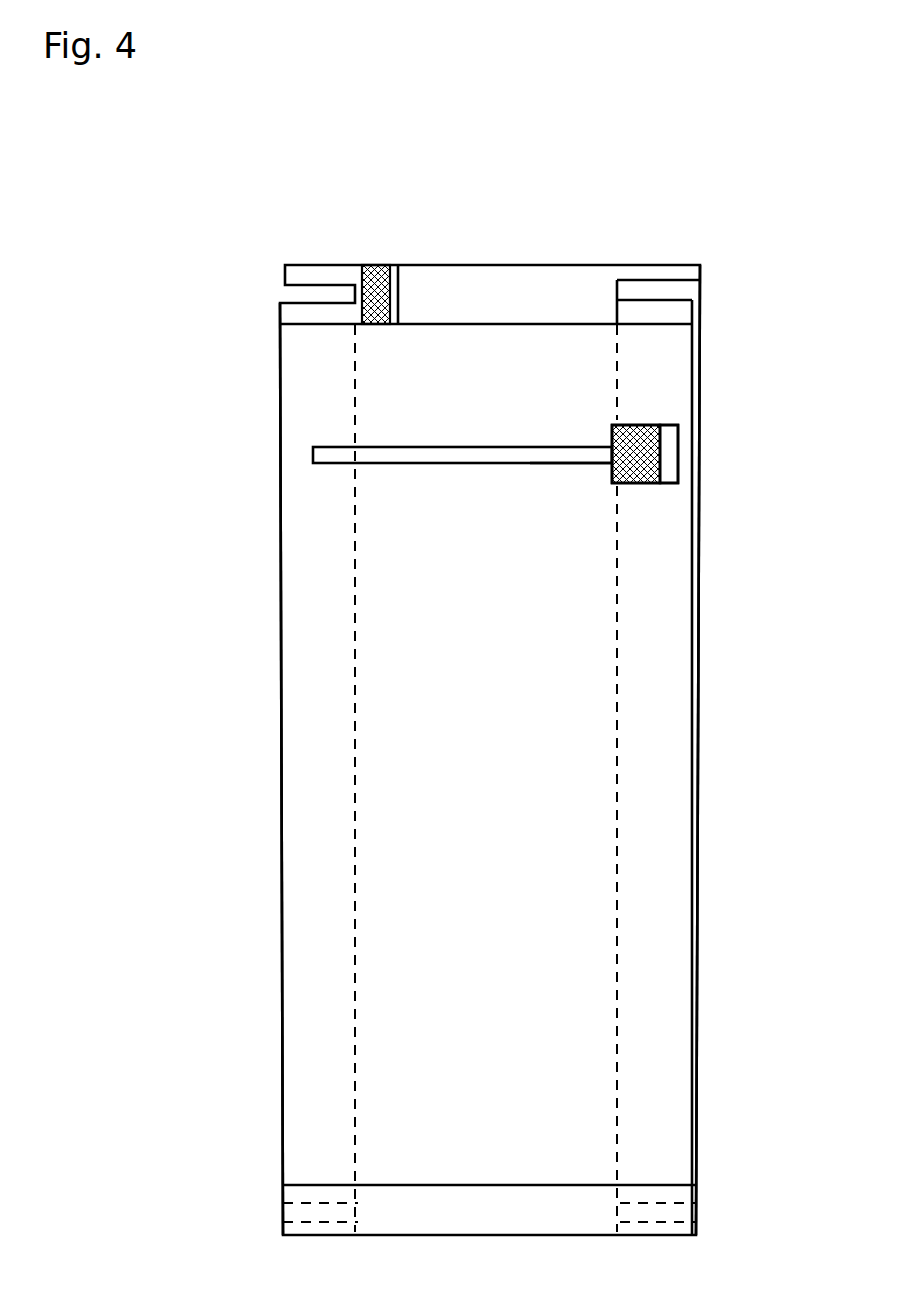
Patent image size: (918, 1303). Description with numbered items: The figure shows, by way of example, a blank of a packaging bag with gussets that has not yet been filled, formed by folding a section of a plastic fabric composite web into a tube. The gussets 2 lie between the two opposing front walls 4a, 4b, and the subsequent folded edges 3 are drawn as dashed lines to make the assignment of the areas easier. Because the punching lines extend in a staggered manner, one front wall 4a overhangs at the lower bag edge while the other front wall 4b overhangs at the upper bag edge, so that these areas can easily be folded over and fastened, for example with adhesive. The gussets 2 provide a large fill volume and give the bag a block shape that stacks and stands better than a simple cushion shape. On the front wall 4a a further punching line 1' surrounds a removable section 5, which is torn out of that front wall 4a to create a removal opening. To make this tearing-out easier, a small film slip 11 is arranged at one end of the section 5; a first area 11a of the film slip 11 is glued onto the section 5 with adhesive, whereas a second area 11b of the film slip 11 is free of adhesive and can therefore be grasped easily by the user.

The further punching line 1' is at (660, 542).
The gussets 2 is at (692, 297).
The folded edges 3 is at (698, 448).
The front wall 4a is at (504, 728).
The front wall 4b is at (553, 288).
The removable section 5 is at (557, 455).
The film slip 11 is at (682, 437).
The first area of the film slip 11a is at (652, 483).
The second area of the film slip 11b is at (670, 472).